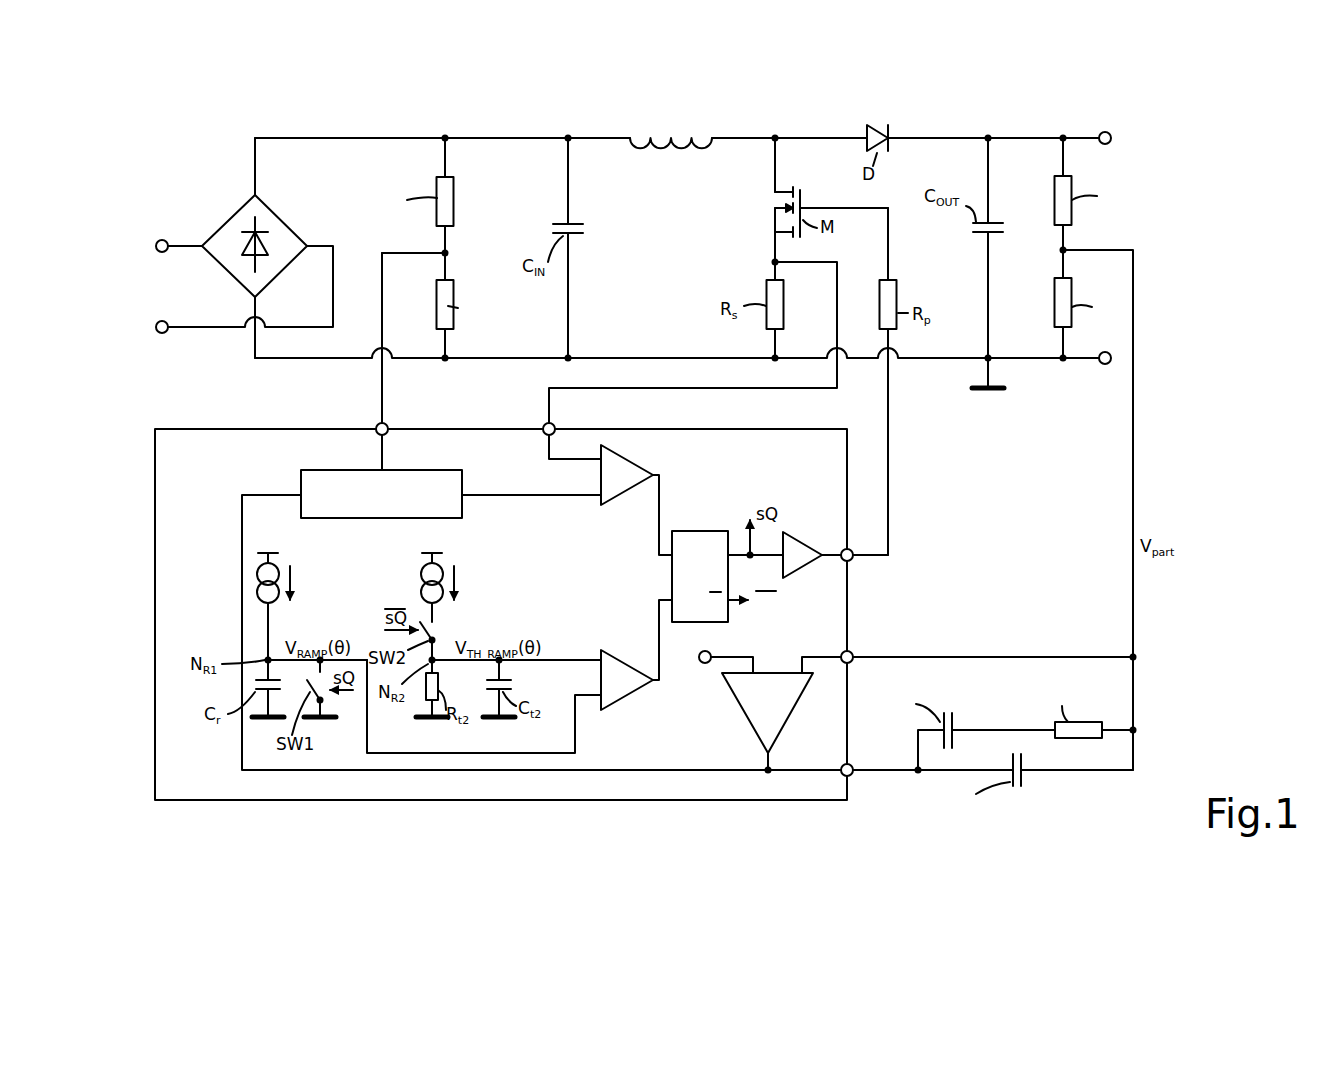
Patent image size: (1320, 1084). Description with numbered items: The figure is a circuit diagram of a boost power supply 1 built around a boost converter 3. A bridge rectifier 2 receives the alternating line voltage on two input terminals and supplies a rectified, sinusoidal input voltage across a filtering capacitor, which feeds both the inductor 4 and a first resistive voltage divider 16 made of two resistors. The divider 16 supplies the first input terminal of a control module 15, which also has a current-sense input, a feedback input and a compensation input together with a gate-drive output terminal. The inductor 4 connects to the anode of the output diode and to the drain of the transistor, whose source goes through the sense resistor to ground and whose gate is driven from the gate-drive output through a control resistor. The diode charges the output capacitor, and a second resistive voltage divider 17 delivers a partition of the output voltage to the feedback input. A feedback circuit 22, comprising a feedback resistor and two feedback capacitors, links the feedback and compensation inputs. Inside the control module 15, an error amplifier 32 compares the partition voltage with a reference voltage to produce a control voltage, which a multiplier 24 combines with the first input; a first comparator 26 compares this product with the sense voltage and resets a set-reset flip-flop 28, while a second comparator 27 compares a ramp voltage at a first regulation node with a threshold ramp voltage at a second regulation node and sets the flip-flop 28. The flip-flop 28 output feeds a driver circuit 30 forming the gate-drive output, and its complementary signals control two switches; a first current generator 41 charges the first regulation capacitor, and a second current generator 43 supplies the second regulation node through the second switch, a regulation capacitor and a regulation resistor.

The boost power supply 1 is at (754, 232).
The bridge rectifier 2 is at (224, 228).
The boost converter 3 is at (684, 116).
The inductor 4 is at (655, 150).
The control module 15 is at (585, 800).
The first resistive voltage divider 16 is at (470, 244).
The second resistive voltage divider 17 is at (1088, 233).
The feedback circuit 22 is at (1050, 792).
The multiplier 24 is at (455, 520).
The first comparator 26 is at (642, 466).
The second comparator 27 is at (628, 688).
The flip-flop 28 is at (705, 531).
The driver circuit 30 is at (801, 547).
The error amplifier 32 is at (781, 730).
The first current generator 41 is at (280, 566).
The second current generator 43 is at (420, 580).